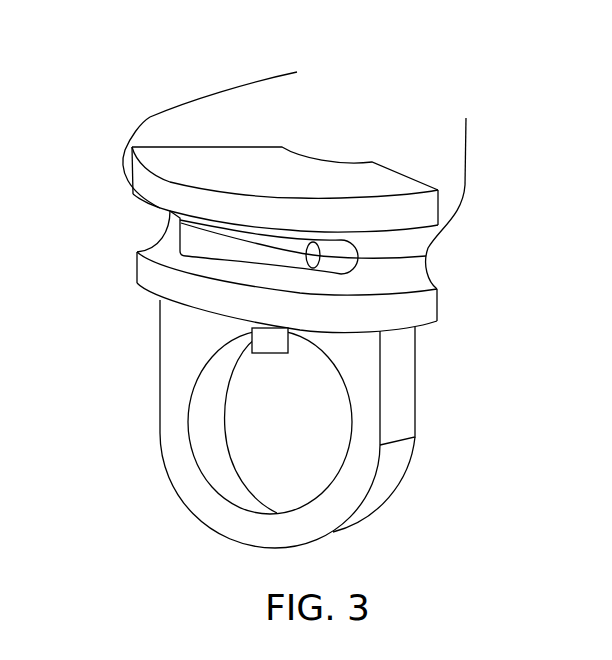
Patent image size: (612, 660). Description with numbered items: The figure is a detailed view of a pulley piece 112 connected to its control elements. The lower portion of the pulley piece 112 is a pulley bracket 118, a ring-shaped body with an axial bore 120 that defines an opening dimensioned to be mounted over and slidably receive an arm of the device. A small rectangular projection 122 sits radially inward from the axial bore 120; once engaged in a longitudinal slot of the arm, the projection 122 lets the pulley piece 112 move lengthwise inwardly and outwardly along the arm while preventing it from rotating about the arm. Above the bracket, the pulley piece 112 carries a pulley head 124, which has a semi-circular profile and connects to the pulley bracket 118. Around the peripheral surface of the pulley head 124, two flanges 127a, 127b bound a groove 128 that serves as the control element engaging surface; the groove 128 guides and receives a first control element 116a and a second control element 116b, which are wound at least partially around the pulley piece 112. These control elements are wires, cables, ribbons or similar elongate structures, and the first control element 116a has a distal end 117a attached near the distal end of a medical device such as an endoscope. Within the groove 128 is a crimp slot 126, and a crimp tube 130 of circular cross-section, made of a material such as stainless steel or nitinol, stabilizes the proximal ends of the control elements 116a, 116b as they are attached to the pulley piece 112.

The pulley piece 112 is at (134, 58).
The distal end 117a is at (282, 72).
The first control element 116a is at (137, 117).
The second control element 116b is at (464, 200).
The pulley head 124 is at (255, 157).
The flange 127a is at (140, 180).
The crimp slot 126 is at (187, 238).
The groove 128 is at (173, 260).
The flange 127b is at (136, 280).
The crimp tube 130 is at (330, 263).
The pulley bracket 118 is at (372, 395).
The axial bore 120 is at (242, 463).
The projection 122 is at (272, 357).